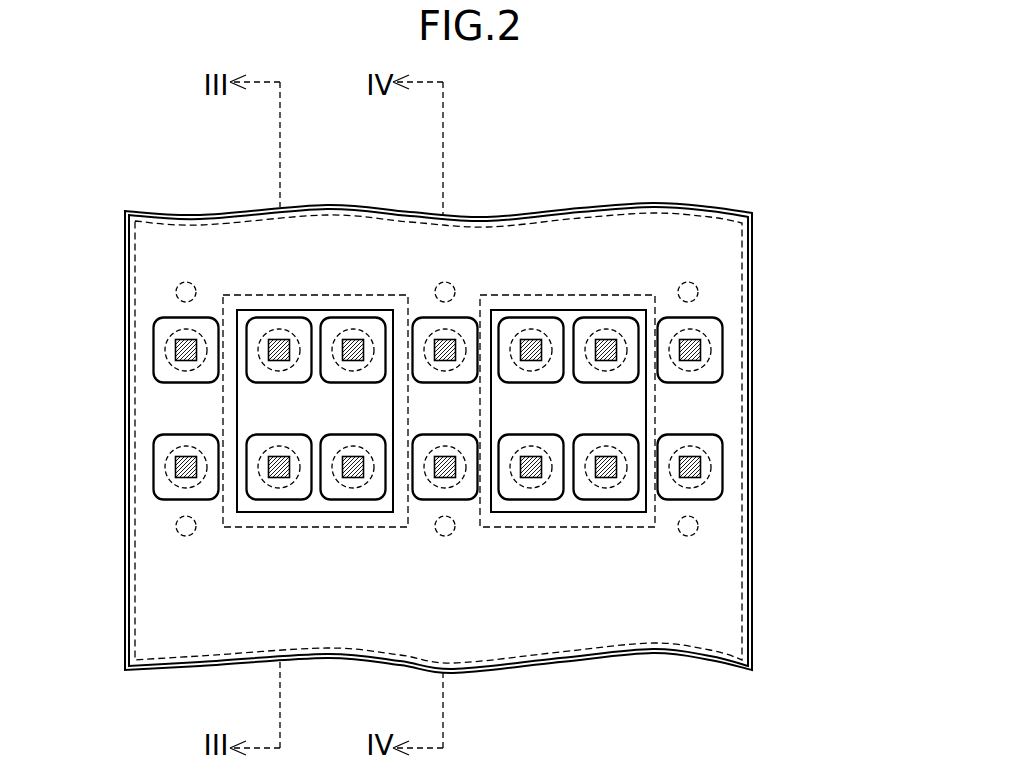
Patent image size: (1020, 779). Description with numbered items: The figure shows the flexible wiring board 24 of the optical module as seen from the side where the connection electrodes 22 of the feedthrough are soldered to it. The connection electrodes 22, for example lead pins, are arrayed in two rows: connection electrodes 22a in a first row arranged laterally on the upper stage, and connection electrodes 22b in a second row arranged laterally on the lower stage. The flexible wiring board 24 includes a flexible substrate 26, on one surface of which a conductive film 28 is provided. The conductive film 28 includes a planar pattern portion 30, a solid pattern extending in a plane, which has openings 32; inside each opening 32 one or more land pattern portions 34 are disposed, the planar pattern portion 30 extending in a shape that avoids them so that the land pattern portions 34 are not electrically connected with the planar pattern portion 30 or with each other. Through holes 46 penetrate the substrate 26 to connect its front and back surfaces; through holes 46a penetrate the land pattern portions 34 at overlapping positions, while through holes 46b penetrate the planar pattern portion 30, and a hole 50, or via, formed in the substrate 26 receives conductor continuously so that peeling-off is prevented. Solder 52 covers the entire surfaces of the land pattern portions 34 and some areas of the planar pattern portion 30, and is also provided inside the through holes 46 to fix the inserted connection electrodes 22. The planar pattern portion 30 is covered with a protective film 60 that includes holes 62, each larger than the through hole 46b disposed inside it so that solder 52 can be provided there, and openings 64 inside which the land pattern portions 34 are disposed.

The connection electrodes 22 is at (820, 349).
The connection electrodes in a first row 22a is at (698, 346).
The connection electrodes in a second row 22b is at (698, 457).
The flexible wiring board 24 is at (630, 177).
The substrate 26 is at (696, 205).
The conductive film 28 is at (250, 592).
The planar pattern portion 30 is at (128, 580).
The opening 32 is at (520, 524).
The land pattern portion 34 is at (265, 500).
The through holes 46 is at (412, 245).
The through holes 46a is at (288, 336).
The through holes 46b is at (434, 337).
The hole (via) 50 is at (445, 282).
The solder 52 is at (458, 320).
The protective film 60 is at (124, 633).
The hole 62 is at (433, 383).
The opening 64 is at (325, 507).